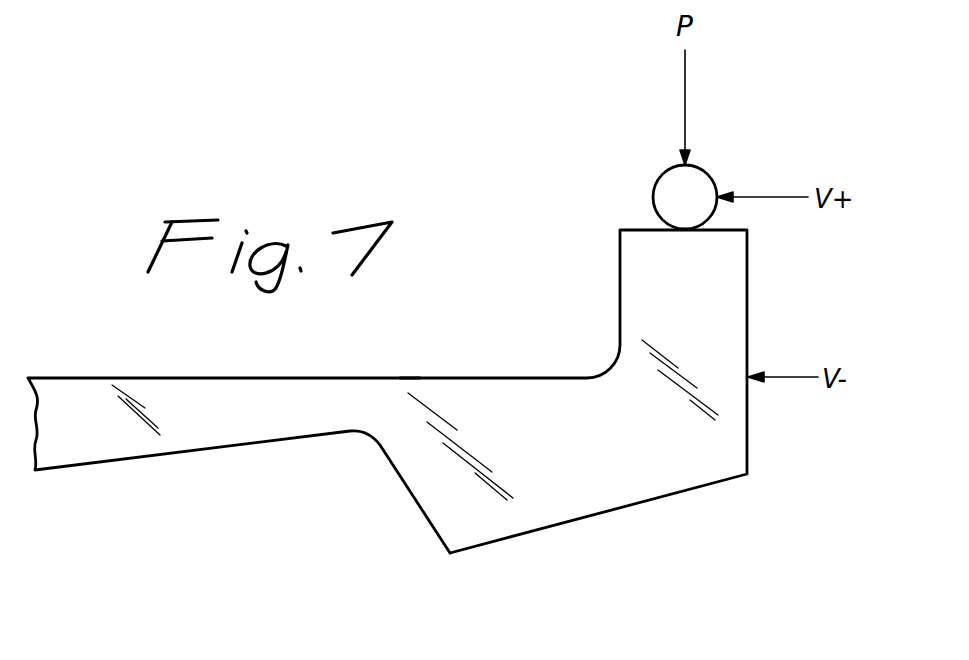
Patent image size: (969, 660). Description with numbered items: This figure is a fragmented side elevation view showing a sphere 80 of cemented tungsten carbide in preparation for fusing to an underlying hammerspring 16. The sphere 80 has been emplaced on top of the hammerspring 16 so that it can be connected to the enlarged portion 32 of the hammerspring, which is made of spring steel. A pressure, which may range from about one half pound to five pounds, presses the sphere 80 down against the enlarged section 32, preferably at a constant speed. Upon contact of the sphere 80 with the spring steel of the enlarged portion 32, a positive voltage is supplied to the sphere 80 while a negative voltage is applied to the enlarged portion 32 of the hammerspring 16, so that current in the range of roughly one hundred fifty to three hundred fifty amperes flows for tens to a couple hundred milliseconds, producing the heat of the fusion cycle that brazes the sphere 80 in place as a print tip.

The hammerspring 16 is at (202, 435).
The enlarged portion of the hammerspring 32 is at (690, 462).
The sphere 80 is at (699, 187).